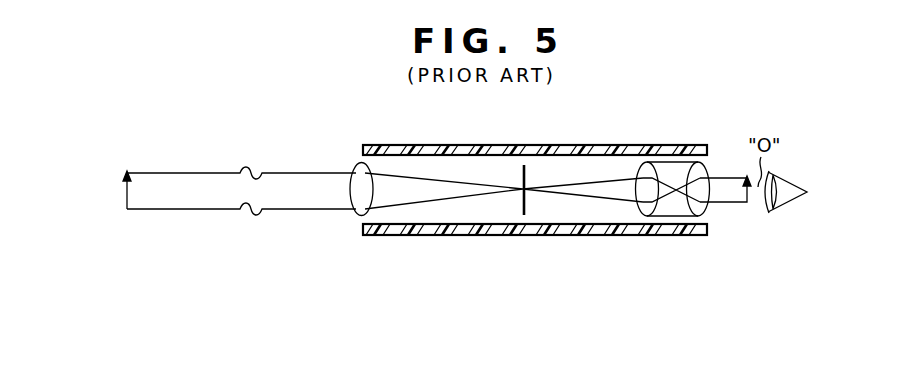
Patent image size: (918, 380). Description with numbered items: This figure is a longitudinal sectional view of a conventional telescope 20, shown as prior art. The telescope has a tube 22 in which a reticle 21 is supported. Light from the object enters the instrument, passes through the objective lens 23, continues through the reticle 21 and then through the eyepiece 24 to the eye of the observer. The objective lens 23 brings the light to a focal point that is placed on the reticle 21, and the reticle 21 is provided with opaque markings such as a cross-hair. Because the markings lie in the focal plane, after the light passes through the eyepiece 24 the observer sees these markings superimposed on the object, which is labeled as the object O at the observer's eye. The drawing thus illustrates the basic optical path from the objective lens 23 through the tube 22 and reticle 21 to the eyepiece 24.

The conventional telescope 20 is at (517, 143).
The reticle 21 is at (528, 168).
The tube 22 is at (460, 236).
The objective lens 23 is at (426, 145).
The eyepiece 24 is at (666, 217).